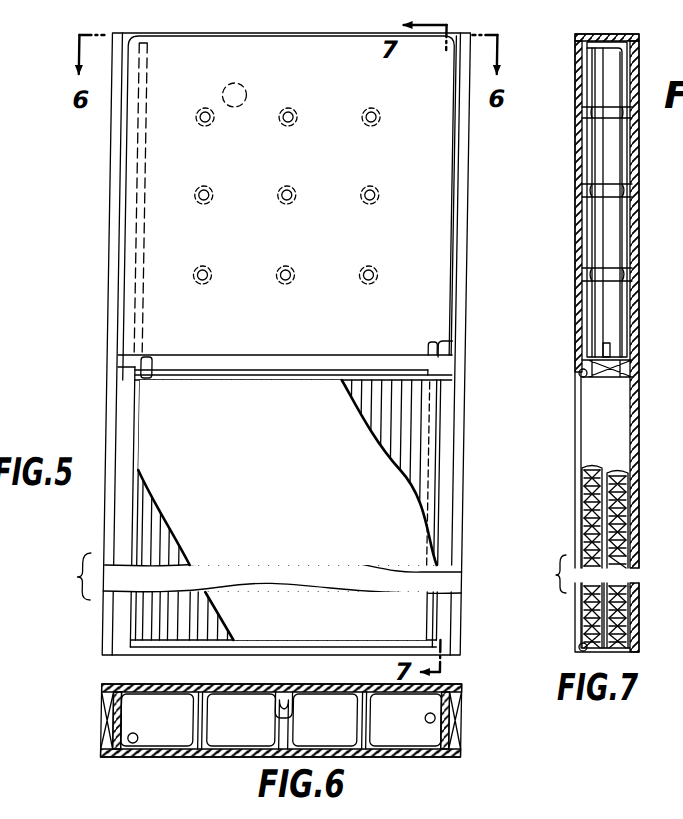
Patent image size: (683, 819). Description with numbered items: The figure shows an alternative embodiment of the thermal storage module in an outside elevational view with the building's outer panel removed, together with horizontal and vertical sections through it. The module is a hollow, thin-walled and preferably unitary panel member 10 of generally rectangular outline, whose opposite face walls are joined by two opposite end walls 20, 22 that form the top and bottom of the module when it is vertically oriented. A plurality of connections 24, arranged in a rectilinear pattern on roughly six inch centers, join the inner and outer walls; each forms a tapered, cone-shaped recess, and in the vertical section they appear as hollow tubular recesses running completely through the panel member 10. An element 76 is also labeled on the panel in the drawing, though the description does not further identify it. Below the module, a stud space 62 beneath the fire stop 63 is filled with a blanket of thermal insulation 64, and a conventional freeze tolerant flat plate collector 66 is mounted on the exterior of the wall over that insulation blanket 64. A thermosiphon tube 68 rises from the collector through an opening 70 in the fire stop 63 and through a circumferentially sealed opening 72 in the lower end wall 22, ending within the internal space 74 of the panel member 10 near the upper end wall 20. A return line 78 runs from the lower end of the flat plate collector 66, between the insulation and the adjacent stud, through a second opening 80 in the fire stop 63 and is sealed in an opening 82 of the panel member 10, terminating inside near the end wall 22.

In FIG. 5, the panel member 10 is at (348, 313).
In FIG. 7, the panel member 10 is at (577, 98).
In FIG. 5, the end wall 20 is at (339, 33).
In FIG. 5, the end wall 22 is at (236, 358).
In FIG. 7, the end wall 22 is at (605, 505).
In FIG. 5, the connections 24 is at (381, 270).
In FIG. 7, the connections 24 is at (637, 189).
In FIG. 5, the stud space 62 is at (453, 468).
In FIG. 7, the stud space 62 is at (607, 343).
In FIG. 5, the fire stop 63 is at (334, 352).
In FIG. 5, the thermal insulation blanket 64 is at (332, 506).
In FIG. 7, the thermal insulation blanket 64 is at (590, 523).
In FIG. 5, the flat plate collector 66 is at (418, 490).
In FIG. 7, the flat plate collector 66 is at (588, 595).
In FIG. 5, the thermosiphon tube 68 is at (149, 255).
In FIG. 7, the thermosiphon tube 68 is at (588, 62).
In FIG. 5, the opening 70 is at (154, 362).
In FIG. 5, the circumferentially sealed opening 72 is at (152, 353).
In FIG. 5, the internal space 74 is at (237, 95).
In FIG. 7, the internal space 74 is at (615, 148).
In FIG. 5, the panel face 76 is at (238, 33).
In FIG. 7, the panel face 76 is at (635, 60).
In FIG. 5, the return line 78 is at (431, 351).
In FIG. 7, the return line 78 is at (610, 350).
In FIG. 5, the opening 80 is at (459, 362).
In FIG. 5, the opening 82 is at (448, 352).